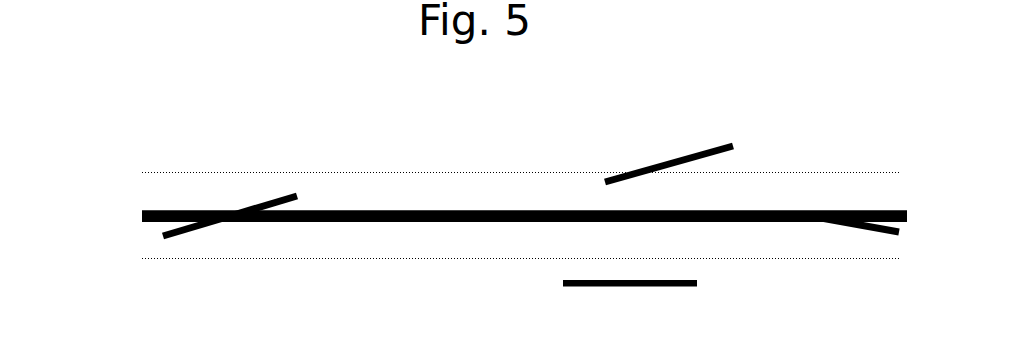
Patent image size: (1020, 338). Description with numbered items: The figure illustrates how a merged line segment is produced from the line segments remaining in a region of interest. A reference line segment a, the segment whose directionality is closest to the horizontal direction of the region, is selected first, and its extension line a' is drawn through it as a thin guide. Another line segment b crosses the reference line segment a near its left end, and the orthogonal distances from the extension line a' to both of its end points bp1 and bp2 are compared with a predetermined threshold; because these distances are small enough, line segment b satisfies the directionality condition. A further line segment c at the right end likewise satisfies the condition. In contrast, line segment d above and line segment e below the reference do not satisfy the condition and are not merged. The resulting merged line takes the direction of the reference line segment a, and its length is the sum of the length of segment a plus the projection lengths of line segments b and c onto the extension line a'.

The extension line a' is at (472, 216).
The reference line segment a is at (433, 260).
The line segment b is at (243, 261).
The line segment c is at (714, 260).
The end point bp1 is at (189, 257).
The end point bp2 is at (279, 172).
The line segment d is at (669, 152).
The line segment e is at (630, 303).